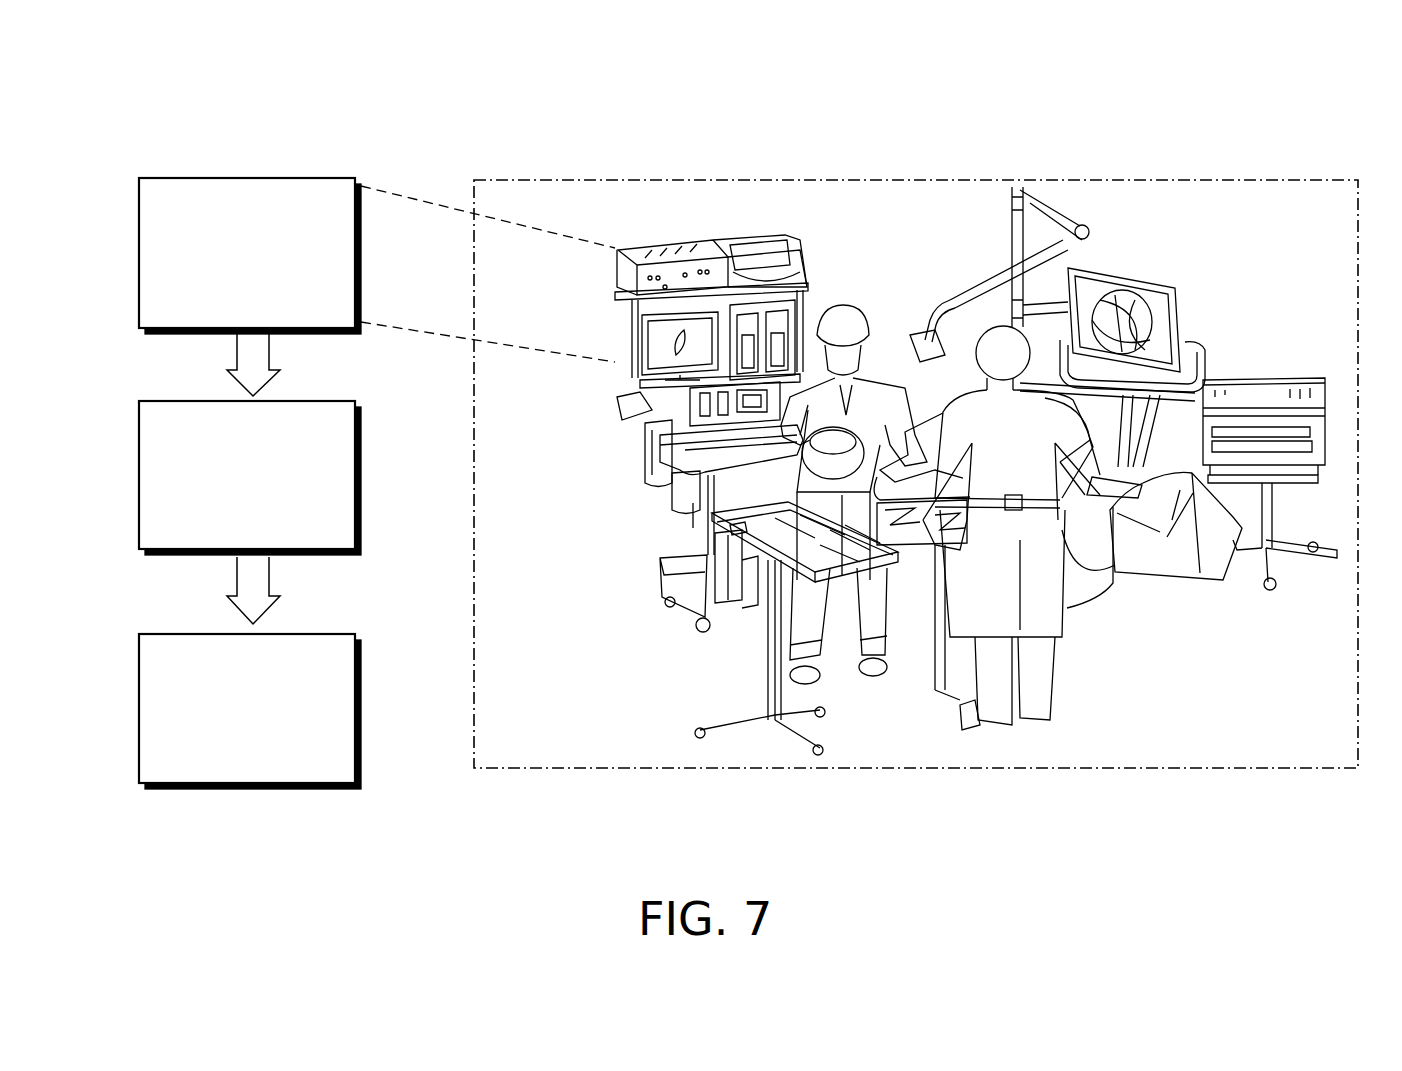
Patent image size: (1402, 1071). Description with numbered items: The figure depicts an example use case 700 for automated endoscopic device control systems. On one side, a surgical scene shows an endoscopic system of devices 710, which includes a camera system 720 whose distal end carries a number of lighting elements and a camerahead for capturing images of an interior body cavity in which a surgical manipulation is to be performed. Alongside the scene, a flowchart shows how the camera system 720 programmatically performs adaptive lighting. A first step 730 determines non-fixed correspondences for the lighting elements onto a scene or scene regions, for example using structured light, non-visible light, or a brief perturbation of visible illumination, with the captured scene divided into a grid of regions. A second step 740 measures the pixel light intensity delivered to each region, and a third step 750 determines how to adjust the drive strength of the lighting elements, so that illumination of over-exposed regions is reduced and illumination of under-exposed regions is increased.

The use case 700 is at (1263, 84).
The endoscopic system of devices 710 is at (1195, 270).
The camera system 720 is at (887, 324).
The first step 730 is at (255, 178).
The second step 740 is at (361, 475).
The third step 750 is at (361, 702).